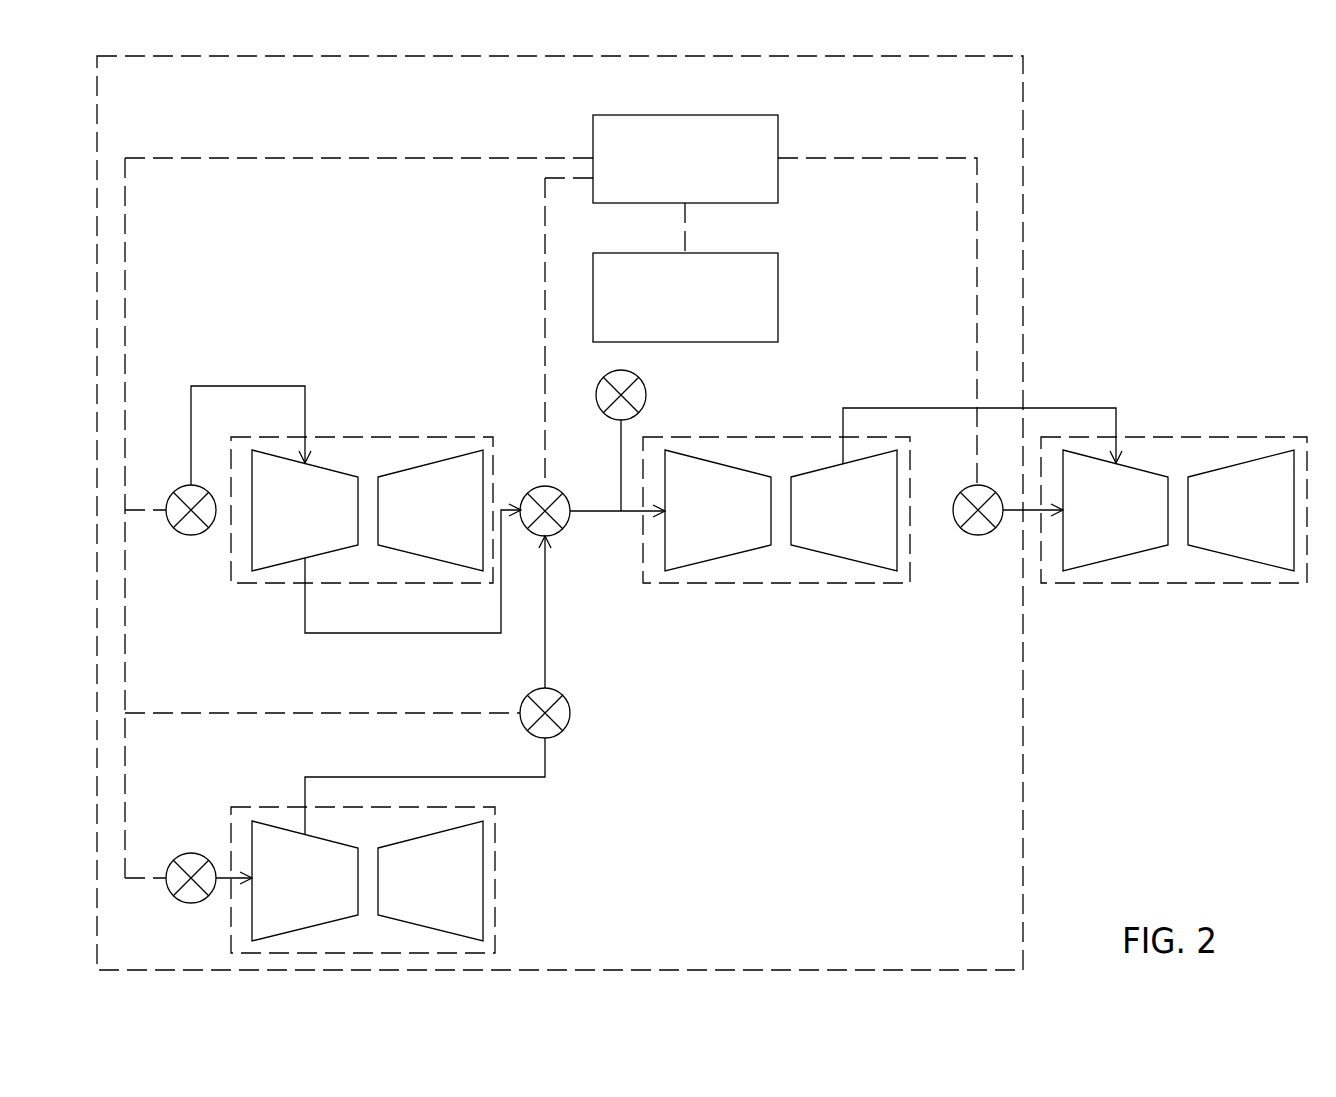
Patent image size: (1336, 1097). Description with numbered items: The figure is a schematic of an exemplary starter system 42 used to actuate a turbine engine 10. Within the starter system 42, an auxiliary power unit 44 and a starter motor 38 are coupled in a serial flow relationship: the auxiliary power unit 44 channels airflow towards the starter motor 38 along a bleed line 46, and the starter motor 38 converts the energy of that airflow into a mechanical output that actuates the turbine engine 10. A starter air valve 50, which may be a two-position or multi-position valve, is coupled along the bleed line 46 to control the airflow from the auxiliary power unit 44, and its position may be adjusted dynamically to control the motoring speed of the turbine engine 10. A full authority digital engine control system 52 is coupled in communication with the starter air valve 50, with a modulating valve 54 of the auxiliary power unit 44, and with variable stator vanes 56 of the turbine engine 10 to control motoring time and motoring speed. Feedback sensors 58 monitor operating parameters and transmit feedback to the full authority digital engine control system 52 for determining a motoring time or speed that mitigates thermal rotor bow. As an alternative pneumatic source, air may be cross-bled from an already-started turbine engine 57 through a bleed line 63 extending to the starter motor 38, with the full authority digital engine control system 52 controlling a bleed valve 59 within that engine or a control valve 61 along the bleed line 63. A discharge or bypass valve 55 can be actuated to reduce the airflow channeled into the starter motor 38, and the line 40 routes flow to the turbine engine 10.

The turbine engine 10 is at (1183, 583).
The starter motor 38 is at (787, 583).
The bleed air line 40 is at (887, 408).
The starter system 42 is at (1023, 127).
The auxiliary power unit 44 is at (375, 437).
The bleed line 46 is at (437, 633).
The starter air valve 50 is at (530, 488).
The full authority digital engine control system 52 is at (750, 115).
The modulating valve 54 is at (180, 488).
The bypass valve 55 is at (639, 382).
The variable stator vanes 56 is at (967, 488).
The already-started turbine engine 57 is at (495, 893).
The feedback sensors 58 is at (778, 298).
The bleed valve 59 is at (180, 856).
The control valve 61 is at (563, 701).
The bleed line 63 is at (508, 777).